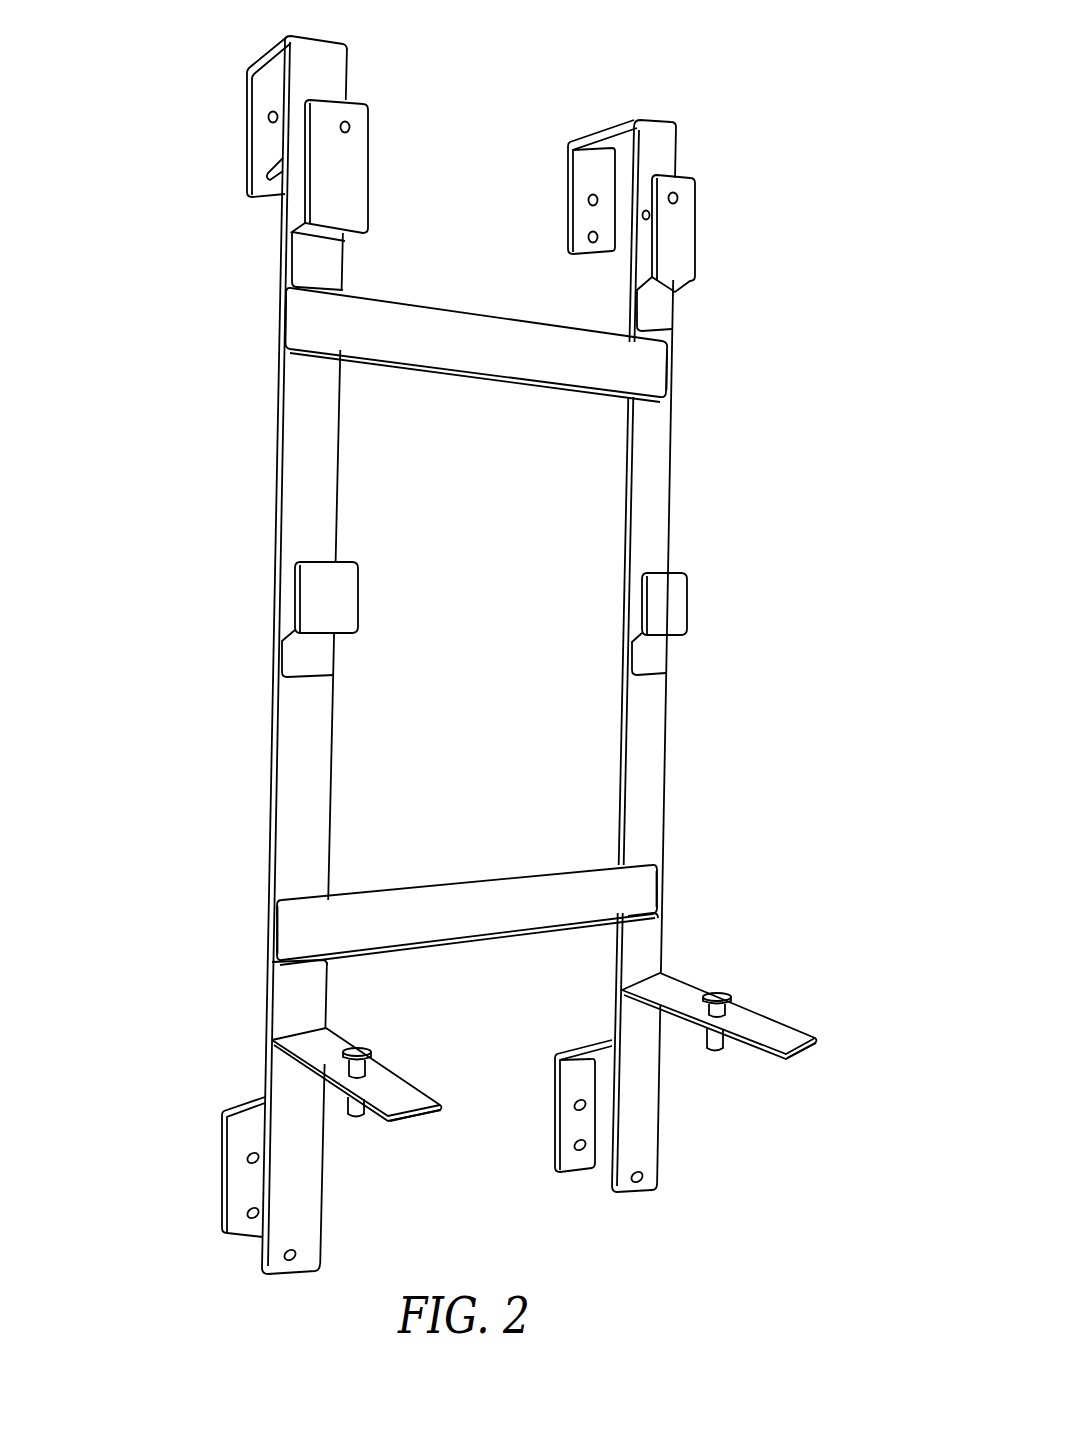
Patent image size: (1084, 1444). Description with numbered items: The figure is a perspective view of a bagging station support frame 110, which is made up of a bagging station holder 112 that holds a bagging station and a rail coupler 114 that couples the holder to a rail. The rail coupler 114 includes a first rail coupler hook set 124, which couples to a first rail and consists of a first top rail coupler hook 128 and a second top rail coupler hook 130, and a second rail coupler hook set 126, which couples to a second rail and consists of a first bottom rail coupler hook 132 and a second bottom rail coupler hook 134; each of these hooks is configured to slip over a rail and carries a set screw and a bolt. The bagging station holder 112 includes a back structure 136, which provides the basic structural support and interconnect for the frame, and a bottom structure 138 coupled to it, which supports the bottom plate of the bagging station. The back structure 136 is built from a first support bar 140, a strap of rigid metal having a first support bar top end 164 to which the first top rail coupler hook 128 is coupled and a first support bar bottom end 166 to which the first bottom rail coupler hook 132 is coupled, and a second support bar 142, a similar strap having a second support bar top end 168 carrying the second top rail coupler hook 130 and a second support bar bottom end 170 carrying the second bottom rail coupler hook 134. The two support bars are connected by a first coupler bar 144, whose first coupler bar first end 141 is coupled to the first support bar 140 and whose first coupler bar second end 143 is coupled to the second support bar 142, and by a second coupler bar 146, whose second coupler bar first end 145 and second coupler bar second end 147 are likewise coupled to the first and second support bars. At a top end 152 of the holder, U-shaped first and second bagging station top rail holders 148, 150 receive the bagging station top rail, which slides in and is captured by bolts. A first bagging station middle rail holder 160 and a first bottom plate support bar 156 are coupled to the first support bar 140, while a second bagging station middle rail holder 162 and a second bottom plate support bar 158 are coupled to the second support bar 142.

The bagging station support frame 110 is at (506, 90).
The bagging station holder 112 is at (758, 540).
The rail coupler 114 is at (710, 141).
The first rail coupler hook set 124 is at (719, 205).
The second rail coupler hook set 126 is at (673, 1221).
The first top rail coupler hook 128 is at (262, 47).
The second top rail coupler hook 130 is at (605, 132).
The first bottom rail coupler hook 132 is at (236, 1184).
The second bottom rail coupler hook 134 is at (562, 1130).
The back structure 136 is at (716, 360).
The bottom structure 138 is at (823, 1000).
The first support bar 140 is at (285, 780).
The first coupler bar first end 141 is at (310, 330).
The second support bar 142 is at (665, 750).
The first coupler bar second end 143 is at (660, 375).
The first coupler bar 144 is at (488, 326).
The second coupler bar first end 145 is at (292, 945).
The second coupler bar 146 is at (487, 890).
The second coupler bar second end 147 is at (650, 885).
The first bagging station top rail holder 148 is at (355, 162).
The second bagging station top rail holder 150 is at (683, 239).
The top end 152 is at (203, 127).
The first bottom plate support bar 156 is at (405, 1086).
The second bottom plate support bar 158 is at (785, 1031).
The first bagging station middle rail holder 160 is at (352, 600).
The second bagging station middle rail holder 162 is at (683, 609).
The first support bar top end 164 is at (340, 63).
The first support bar bottom end 166 is at (305, 1262).
The second support bar top end 168 is at (655, 127).
The second support bar bottom end 170 is at (630, 1195).